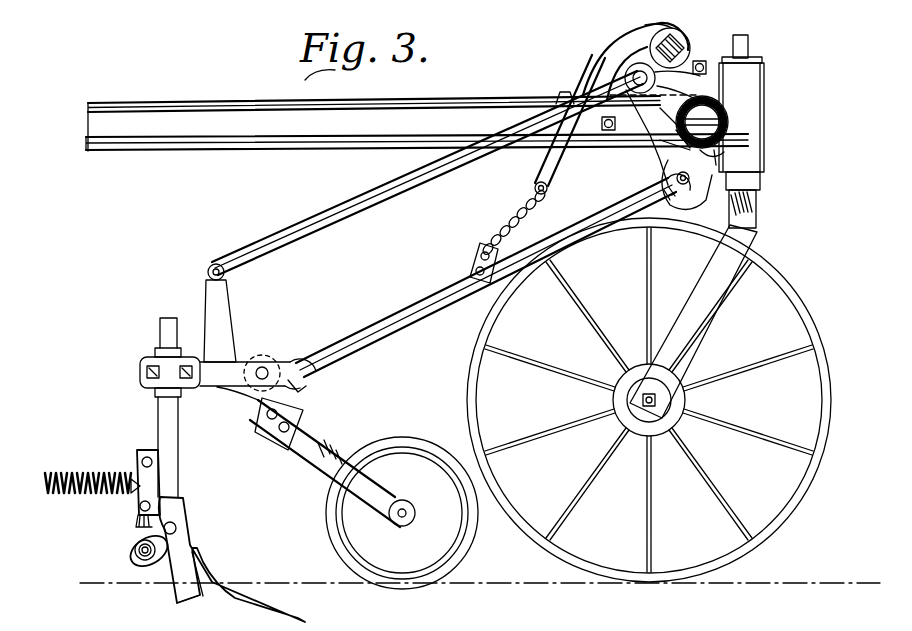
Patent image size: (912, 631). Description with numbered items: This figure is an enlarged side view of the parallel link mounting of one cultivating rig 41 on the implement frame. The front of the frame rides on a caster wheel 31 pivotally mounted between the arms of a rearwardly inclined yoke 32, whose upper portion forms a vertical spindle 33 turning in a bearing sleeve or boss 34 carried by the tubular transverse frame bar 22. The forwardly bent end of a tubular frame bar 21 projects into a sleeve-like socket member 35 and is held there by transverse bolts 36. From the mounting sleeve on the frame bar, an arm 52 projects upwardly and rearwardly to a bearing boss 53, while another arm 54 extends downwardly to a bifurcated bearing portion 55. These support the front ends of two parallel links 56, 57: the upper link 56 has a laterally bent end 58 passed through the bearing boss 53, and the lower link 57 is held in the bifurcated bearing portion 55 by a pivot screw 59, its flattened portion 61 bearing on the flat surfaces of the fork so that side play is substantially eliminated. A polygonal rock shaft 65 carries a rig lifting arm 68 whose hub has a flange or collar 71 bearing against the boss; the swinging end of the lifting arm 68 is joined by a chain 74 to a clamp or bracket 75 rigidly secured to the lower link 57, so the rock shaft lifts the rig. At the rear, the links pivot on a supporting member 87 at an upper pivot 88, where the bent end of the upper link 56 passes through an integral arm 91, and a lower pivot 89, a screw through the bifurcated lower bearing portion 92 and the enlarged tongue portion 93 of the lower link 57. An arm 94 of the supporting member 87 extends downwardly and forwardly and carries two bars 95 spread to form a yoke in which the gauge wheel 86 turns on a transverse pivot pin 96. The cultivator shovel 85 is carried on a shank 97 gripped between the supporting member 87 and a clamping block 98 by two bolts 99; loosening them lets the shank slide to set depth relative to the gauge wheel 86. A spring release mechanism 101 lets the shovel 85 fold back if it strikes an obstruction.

The frame bars 21 is at (86, 106).
The transverse frame bar 22 is at (727, 118).
The caster wheels 31 is at (787, 292).
The yoke 32 is at (706, 314).
The vertical spindle 33 is at (750, 43).
The bearing sleeve or boss 34 is at (764, 95).
The sleeve-like socket member 35 is at (588, 148).
The transverse bolts 36 is at (607, 131).
The cultivating rig 41 is at (141, 338).
The arm 52 is at (662, 100).
The bearing boss 53 is at (625, 62).
The arm 54 is at (714, 157).
The bifurcated bearing portion 55 is at (688, 186).
The upper link 56 is at (432, 192).
The lower link 57 is at (445, 290).
The bent end 58 is at (624, 78).
The pivot screw 59 is at (677, 192).
The flattened portion 61 is at (655, 200).
The rock shaft 65 is at (696, 35).
The rig lifting arm 68 is at (538, 163).
The flange or collar 71 is at (662, 30).
The chain 74 is at (525, 208).
The clamp or bracket 75 is at (482, 250).
The cultivator shovel 85 is at (245, 586).
The gauge wheel 86 is at (332, 505).
The supporting member 87 is at (215, 390).
The upper pivot 88 is at (216, 262).
The lower pivot 89 is at (264, 368).
The arm 91 is at (230, 322).
The lower bearing portion 92 is at (296, 384).
The tongue portion 93 is at (317, 371).
The arm 94 is at (285, 430).
The bars 95 is at (327, 447).
The transverse pivot pin 96 is at (402, 510).
The shank 97 is at (160, 414).
The clamping block 98 is at (143, 362).
The bolts 99 is at (180, 376).
The spring release mechanism 101 is at (128, 500).